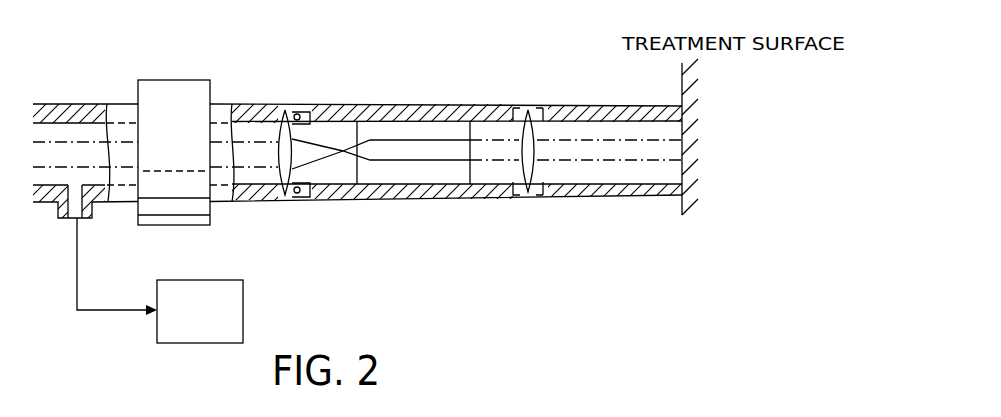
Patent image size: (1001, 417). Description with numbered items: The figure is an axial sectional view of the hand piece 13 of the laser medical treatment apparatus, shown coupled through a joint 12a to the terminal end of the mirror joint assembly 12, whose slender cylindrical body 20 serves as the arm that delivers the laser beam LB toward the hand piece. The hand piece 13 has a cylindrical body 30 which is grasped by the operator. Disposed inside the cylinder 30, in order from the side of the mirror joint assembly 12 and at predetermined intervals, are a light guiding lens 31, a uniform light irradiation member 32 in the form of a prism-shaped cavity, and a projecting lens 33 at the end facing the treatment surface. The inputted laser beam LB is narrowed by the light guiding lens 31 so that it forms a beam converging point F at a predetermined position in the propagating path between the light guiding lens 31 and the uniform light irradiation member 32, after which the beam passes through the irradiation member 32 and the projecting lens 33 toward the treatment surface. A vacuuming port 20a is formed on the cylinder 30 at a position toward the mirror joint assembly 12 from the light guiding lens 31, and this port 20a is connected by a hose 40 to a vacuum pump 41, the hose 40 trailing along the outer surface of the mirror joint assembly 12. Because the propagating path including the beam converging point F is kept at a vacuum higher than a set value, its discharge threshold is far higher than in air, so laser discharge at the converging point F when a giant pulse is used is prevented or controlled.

The mirror joint assembly 12 is at (55, 100).
The cylindrical body 20 is at (88, 106).
The joint 12a is at (186, 80).
The cylindrical body 30 is at (448, 104).
The hand piece 13 is at (505, 97).
The light guiding lens 31 is at (305, 104).
The uniform light irradiation member 32 is at (393, 128).
The projecting lens 33 is at (565, 110).
The vacuuming port 20a is at (58, 218).
The hose 40 is at (77, 245).
The vacuum pump 41 is at (243, 315).
The laser beam LB is at (46, 196).
The beam converging point F is at (341, 138).